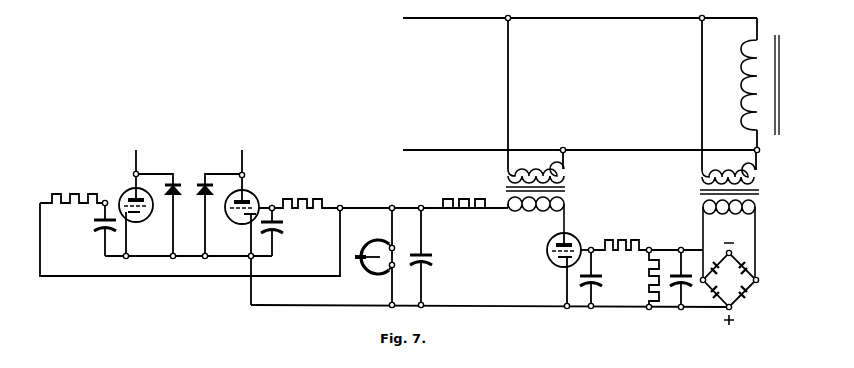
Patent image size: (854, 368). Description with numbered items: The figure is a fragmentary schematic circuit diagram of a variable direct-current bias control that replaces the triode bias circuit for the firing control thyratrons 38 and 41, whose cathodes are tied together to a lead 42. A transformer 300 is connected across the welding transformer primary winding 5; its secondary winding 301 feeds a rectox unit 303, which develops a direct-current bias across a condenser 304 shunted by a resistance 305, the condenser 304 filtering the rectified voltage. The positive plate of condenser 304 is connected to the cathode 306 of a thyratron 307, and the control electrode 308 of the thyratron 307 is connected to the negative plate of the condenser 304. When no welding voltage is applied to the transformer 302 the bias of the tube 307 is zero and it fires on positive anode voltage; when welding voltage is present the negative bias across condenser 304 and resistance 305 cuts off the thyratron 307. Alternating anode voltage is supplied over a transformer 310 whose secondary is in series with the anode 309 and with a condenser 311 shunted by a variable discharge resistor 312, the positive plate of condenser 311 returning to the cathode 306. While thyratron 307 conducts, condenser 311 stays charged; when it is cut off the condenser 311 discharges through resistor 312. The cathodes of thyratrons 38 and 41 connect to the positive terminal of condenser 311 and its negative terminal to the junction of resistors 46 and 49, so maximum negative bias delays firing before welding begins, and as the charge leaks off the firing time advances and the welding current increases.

The primary winding 5 is at (748, 70).
The thyratron 38 is at (252, 196).
The thyratron 41 is at (129, 192).
The lead 42 is at (157, 258).
The resistor 46 is at (318, 192).
The resistor 49 is at (84, 191).
The transformer 300 is at (726, 221).
The secondary winding 301 is at (754, 209).
The transformer 302 is at (755, 177).
The rectox unit 303 is at (738, 300).
The condenser 304 is at (599, 284).
The resistance 305 is at (648, 273).
The cathode 306 is at (555, 263).
The thyratron 307 is at (549, 237).
The control electrode 308 is at (547, 250).
The anode 309 is at (579, 242).
The transformer 310 is at (566, 204).
The condenser 311 is at (427, 263).
The variable discharge resistor 312 is at (382, 240).